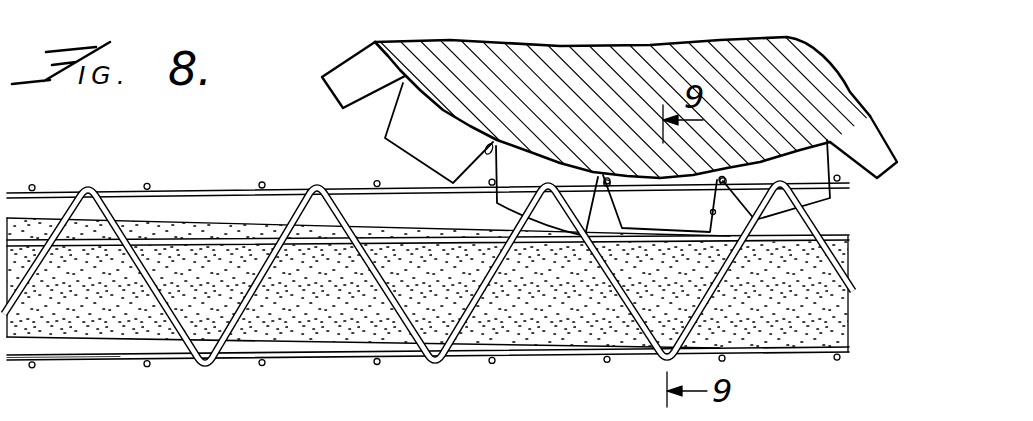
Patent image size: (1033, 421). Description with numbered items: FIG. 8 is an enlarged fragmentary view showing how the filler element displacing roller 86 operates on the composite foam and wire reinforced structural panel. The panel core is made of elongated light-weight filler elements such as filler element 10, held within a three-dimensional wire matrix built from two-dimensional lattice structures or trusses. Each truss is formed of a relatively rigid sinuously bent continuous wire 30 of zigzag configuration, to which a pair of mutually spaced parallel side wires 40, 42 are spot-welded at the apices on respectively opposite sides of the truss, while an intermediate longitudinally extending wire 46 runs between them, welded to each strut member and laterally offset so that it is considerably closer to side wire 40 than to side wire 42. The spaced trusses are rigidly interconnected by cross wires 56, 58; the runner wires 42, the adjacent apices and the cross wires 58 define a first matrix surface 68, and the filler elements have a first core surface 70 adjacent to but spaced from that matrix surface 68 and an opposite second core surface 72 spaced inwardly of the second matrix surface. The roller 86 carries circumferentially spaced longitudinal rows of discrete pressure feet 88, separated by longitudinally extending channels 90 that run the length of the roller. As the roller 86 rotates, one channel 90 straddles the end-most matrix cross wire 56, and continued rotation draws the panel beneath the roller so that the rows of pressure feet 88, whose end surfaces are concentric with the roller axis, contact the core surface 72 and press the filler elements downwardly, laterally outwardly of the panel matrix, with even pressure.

The filler element 10 is at (533, 335).
The sinuously bent continuous wire 30 is at (392, 292).
The side wire 40 is at (438, 192).
The side wire 42 is at (347, 358).
The intermediate longitudinally extending wire 46 is at (441, 244).
The cross wire 56 is at (612, 178).
The cross wire 58 is at (262, 367).
The first matrix surface 68 is at (87, 372).
The first core surface 70 is at (127, 338).
The second core surface 72 is at (192, 217).
The roller 86 is at (601, 47).
The pressure foot 88 is at (407, 147).
The longitudinal channel 90 is at (362, 105).